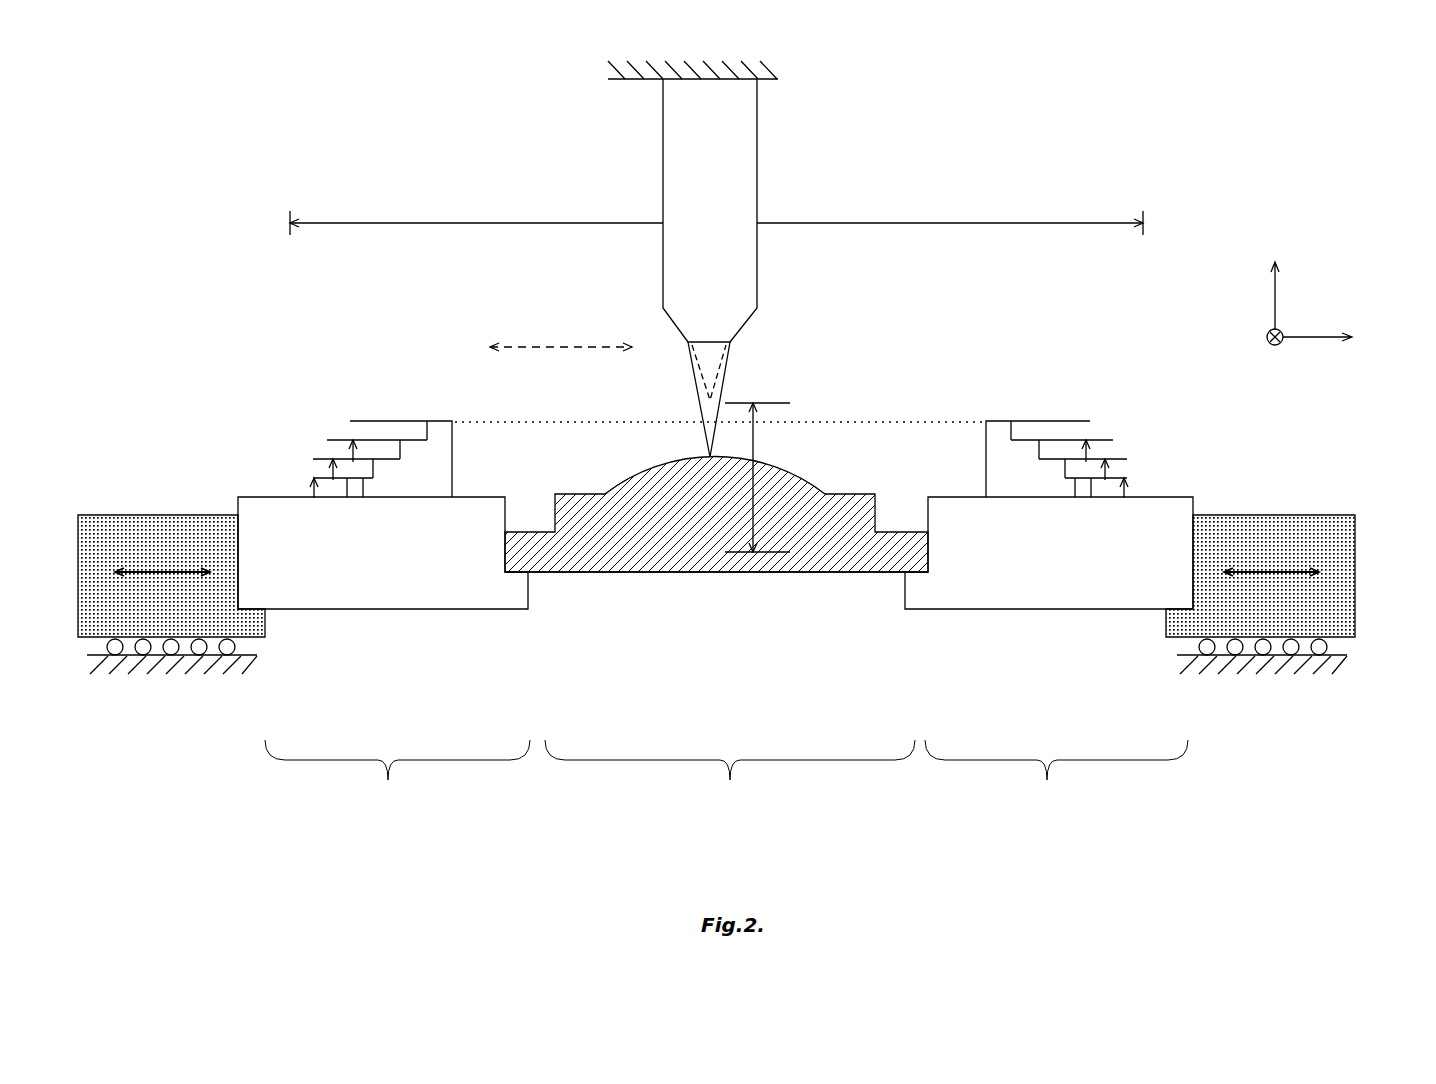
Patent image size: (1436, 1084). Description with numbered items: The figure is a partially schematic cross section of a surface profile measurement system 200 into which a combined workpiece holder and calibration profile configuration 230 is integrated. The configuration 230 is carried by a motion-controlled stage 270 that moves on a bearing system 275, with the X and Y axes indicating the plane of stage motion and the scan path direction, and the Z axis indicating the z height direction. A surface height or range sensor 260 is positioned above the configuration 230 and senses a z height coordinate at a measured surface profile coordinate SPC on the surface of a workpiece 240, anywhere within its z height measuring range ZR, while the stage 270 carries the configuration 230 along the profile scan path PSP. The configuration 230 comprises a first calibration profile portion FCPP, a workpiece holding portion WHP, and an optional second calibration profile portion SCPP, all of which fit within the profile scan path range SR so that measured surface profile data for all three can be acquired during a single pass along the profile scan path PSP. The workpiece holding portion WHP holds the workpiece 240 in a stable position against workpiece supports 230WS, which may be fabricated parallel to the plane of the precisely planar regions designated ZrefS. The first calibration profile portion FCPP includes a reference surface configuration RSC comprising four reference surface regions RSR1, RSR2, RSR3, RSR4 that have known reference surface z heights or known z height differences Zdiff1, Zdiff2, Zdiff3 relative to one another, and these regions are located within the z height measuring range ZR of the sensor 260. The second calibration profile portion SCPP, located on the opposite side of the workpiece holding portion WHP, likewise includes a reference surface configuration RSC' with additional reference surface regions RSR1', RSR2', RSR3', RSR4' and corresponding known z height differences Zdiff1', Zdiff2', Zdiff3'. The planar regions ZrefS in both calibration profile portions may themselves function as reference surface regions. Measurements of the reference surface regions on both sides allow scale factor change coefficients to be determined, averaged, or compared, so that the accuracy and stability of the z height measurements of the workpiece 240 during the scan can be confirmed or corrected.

The surface profile measurement system 200 is at (1203, 127).
The combined workpiece holder and calibration profile configuration 230 is at (1185, 820).
The workpiece support 230WS is at (507, 573).
The workpiece 240 is at (752, 572).
The surface height or range sensor 260 is at (757, 103).
The motion-controlled stage 270 is at (150, 515).
The bearing system 275 is at (125, 690).
The profile scan path range SR is at (545, 213).
The profile scan path PSP is at (570, 345).
The z height measuring range ZR is at (757, 457).
The surface profile coordinate SPC is at (705, 452).
The reference surface configuration RSC is at (398, 403).
The reference surface configuration RSC' is at (1036, 403).
The designated planar reference region ZrefS is at (477, 497).
The z height difference Zdiff1 is at (261, 463).
The z height difference Zdiff2 is at (284, 438).
The z height difference Zdiff3 is at (298, 409).
The z height difference Zdiff1' is at (1176, 464).
The z height difference Zdiff2' is at (1152, 437).
The z height difference Zdiff3' is at (1138, 407).
The reference surface region RSR1 is at (319, 560).
The reference surface region RSR2 is at (333, 564).
The reference surface region RSR3 is at (350, 569).
The reference surface region RSR4 is at (366, 574).
The reference surface region RSR1' is at (1114, 560).
The reference surface region RSR2' is at (1094, 564).
The reference surface region RSR3' is at (1075, 570).
The reference surface region RSR4' is at (1055, 575).
The first calibration profile portion FCPP is at (397, 783).
The workpiece holding portion WHP is at (730, 783).
The second calibration profile portion SCPP is at (1056, 783).
The z height direction Z is at (1275, 290).
The x direction X is at (1354, 338).
The y direction Y is at (1282, 371).